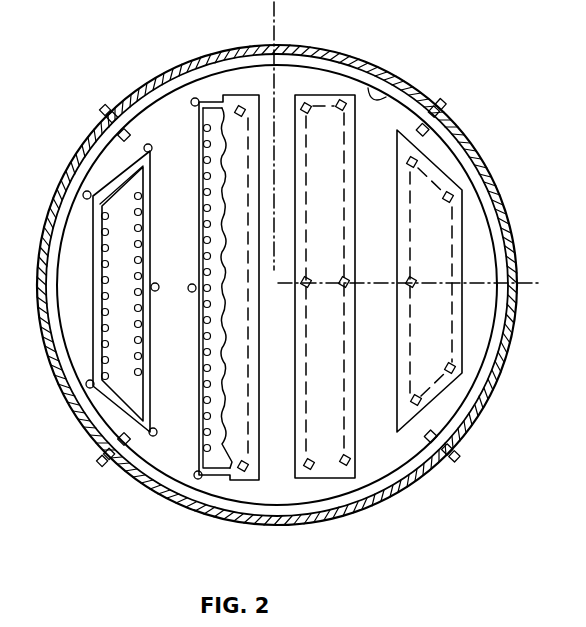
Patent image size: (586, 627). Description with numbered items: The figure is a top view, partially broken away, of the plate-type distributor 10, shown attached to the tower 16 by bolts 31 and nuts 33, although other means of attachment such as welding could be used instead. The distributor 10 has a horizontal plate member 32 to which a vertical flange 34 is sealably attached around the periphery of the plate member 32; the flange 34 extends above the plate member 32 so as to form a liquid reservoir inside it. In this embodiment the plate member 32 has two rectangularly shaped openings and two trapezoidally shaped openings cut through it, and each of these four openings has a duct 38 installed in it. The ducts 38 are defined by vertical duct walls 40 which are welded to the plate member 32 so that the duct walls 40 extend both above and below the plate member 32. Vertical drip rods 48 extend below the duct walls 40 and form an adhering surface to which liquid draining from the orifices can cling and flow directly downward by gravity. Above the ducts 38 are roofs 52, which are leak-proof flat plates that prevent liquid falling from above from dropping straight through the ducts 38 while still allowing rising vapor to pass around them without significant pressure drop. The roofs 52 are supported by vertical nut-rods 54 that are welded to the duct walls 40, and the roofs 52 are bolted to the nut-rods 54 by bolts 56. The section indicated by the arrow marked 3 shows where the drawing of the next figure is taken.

The section line for FIG. 3 is at (538, 283).
The plate-type distributor 10 is at (343, 53).
The tower 16 is at (128, 95).
The bolts 31 is at (98, 106).
The horizontal plate member 32 is at (385, 125).
The nuts 33 is at (92, 115).
The vertical flange 34 is at (409, 87).
The ducts 38 is at (127, 373).
The vertical duct walls 40 is at (197, 443).
The vertical drip rods 48 is at (113, 209).
The roofs 52 is at (431, 196).
The vertical nut-rods 54 is at (195, 99).
The bolts 56 is at (492, 208).